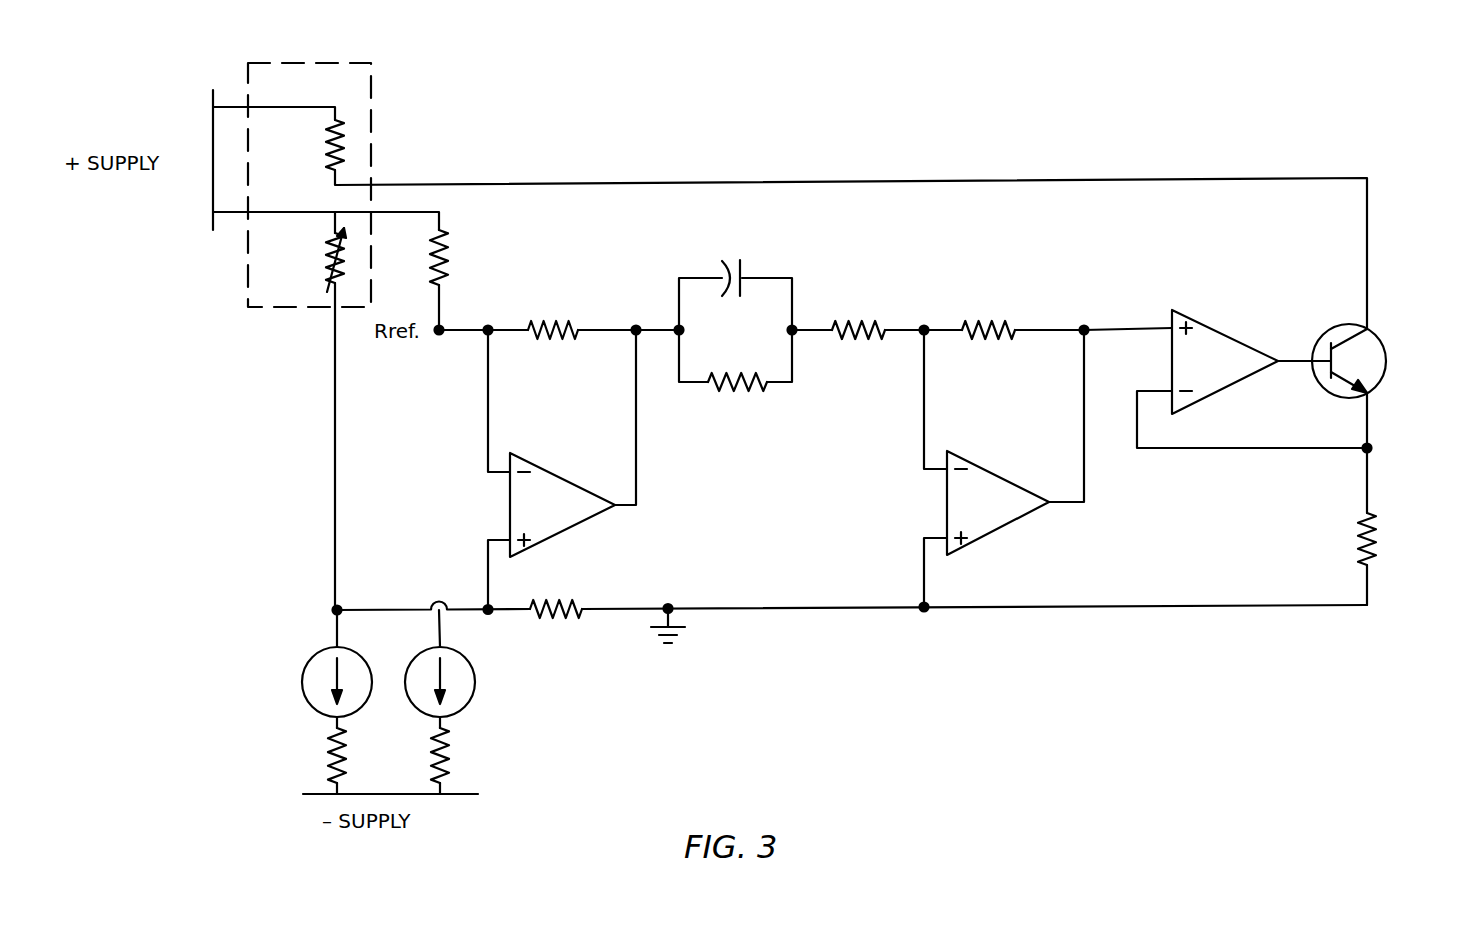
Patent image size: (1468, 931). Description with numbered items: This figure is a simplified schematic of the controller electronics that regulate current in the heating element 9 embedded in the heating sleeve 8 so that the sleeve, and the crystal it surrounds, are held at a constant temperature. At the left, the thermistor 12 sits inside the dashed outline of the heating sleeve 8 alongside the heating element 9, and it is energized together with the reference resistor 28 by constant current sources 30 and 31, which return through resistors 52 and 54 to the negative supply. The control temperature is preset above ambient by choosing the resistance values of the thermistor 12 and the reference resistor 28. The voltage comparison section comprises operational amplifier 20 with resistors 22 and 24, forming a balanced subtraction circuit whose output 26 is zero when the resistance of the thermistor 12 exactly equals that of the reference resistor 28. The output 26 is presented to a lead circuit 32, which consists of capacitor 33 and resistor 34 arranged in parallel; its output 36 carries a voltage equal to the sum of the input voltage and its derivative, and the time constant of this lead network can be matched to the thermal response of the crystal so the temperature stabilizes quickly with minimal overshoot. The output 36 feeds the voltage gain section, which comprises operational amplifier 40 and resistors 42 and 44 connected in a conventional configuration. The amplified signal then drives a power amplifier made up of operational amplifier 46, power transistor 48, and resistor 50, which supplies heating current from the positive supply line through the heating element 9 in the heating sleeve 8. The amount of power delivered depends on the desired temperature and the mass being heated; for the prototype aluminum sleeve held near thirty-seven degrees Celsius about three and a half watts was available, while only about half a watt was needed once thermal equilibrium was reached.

The heating sleeve 8 is at (371, 86).
The heating element 9 is at (344, 140).
The thermistor 12 is at (336, 252).
The reference resistor 28 is at (447, 253).
The resistor 24 is at (543, 318).
The output 26 is at (650, 325).
The lead circuit 32 is at (782, 339).
The capacitor 33 is at (742, 262).
The resistor 34 is at (740, 392).
The output 36 is at (818, 326).
The resistor 42 is at (850, 340).
The resistor 44 is at (984, 318).
The operational amplifier 20 is at (586, 516).
The resistor 22 is at (566, 620).
The operational amplifier 40 is at (1020, 515).
The operational amplifier 46 is at (1212, 322).
The power transistor 48 is at (1384, 343).
The resistor 50 is at (1358, 538).
The constant current source 30 is at (302, 690).
The constant current source 31 is at (476, 690).
The resistor 52 is at (330, 760).
The resistor 54 is at (452, 758).